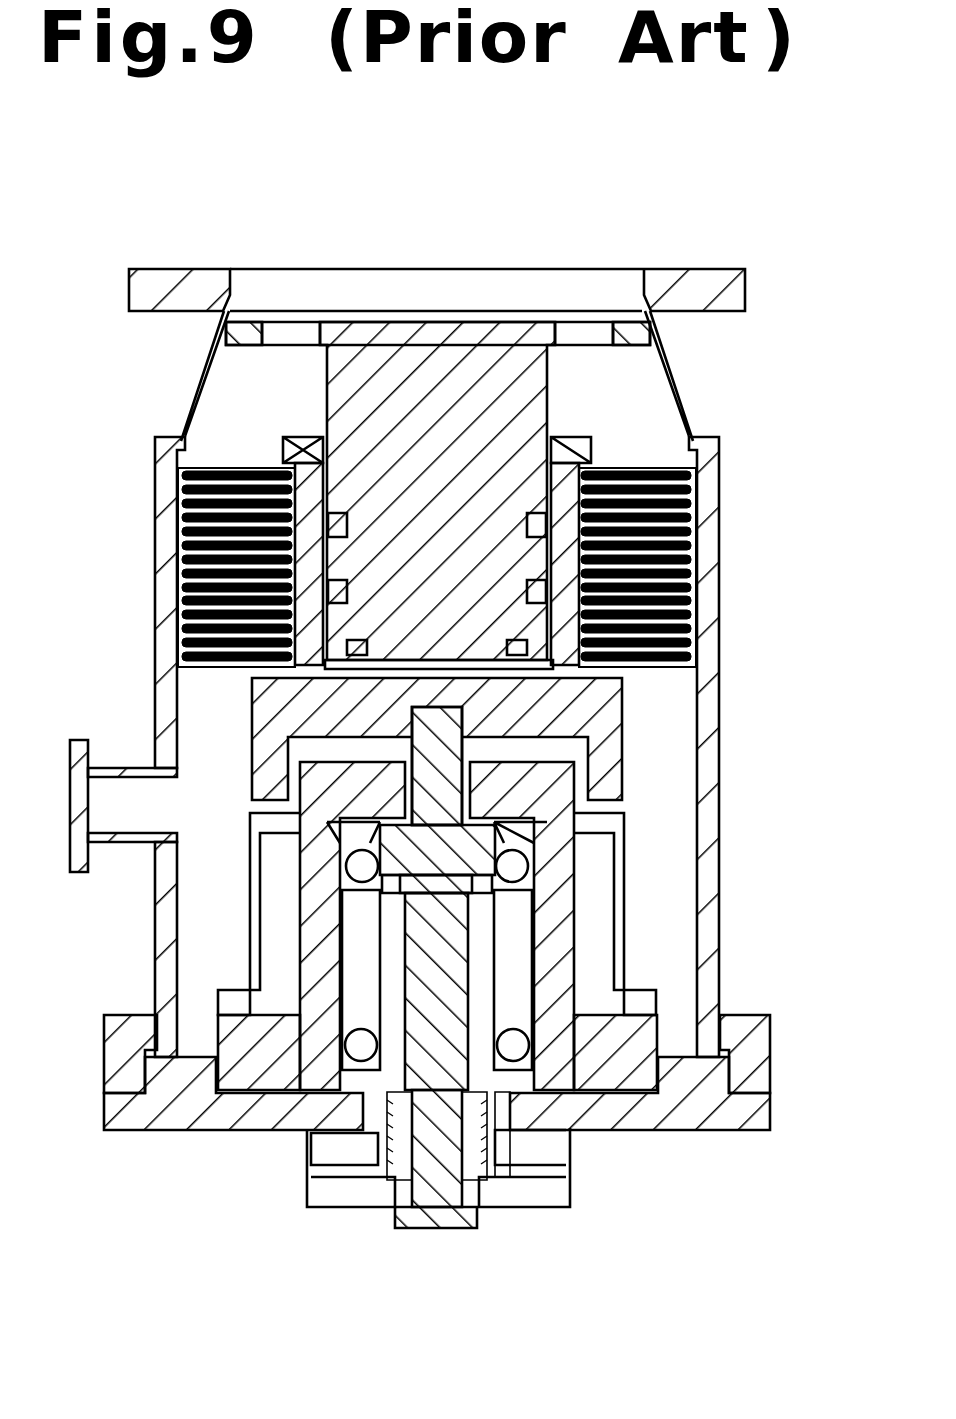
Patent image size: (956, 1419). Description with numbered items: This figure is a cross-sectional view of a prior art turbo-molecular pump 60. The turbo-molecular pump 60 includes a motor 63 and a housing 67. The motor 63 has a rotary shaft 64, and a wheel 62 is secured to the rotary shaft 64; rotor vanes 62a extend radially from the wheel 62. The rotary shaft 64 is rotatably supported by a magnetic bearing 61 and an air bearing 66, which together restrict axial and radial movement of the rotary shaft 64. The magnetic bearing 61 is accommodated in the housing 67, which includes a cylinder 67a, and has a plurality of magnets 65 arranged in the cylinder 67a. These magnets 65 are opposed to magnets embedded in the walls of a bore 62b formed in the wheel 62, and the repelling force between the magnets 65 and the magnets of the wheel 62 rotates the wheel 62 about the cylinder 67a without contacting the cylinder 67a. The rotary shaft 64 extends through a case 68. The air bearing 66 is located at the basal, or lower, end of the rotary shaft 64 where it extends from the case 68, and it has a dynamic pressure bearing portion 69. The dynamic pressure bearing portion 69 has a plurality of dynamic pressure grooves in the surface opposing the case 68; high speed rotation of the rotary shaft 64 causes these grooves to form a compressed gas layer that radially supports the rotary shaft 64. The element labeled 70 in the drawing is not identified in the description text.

The turbo-molecular pump 60 is at (678, 240).
The magnetic bearing 61 is at (300, 458).
The wheel 62 is at (618, 707).
The rotor vanes 62a is at (181, 519).
The bore 62b is at (547, 440).
The motor 63 is at (600, 906).
The rotary shaft 64 is at (430, 1192).
The magnets 65 is at (513, 643).
The air bearing 66 is at (545, 1222).
The housing 67 is at (207, 268).
The cylinder 67a is at (326, 396).
The case 68 is at (313, 906).
The dynamic pressure bearing portion 69 is at (320, 1206).
The right stator coil 70 is at (703, 528).